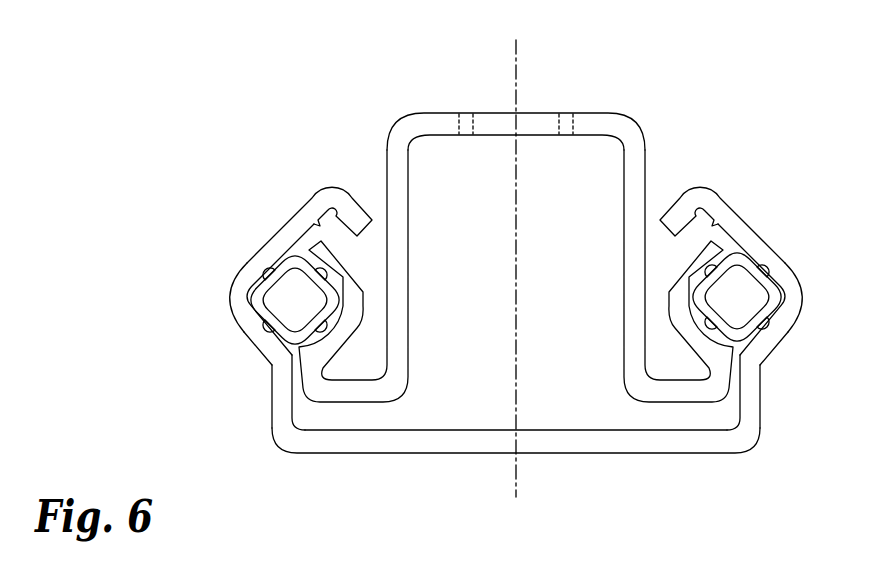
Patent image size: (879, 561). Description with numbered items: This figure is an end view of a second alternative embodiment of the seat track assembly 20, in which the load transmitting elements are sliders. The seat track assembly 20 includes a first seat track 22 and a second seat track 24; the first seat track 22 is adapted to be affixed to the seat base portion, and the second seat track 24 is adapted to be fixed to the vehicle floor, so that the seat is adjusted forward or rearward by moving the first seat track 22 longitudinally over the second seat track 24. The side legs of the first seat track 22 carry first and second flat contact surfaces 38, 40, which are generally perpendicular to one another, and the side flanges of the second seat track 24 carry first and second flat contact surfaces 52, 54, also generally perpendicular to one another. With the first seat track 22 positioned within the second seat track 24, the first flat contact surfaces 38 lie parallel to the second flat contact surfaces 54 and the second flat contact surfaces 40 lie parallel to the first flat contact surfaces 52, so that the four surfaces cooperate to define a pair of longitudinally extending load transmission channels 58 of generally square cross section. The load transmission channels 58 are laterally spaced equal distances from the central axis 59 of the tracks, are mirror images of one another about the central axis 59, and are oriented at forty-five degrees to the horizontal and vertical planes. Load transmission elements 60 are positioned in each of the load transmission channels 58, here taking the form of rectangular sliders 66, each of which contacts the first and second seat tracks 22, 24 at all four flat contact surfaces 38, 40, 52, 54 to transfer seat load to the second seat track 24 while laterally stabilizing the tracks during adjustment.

The seat track assembly 20 is at (163, 88).
The first seat track 22 is at (603, 109).
The second seat track 24 is at (630, 462).
The first flat contact surfaces 38 is at (322, 323).
The second flat contact surfaces 40 is at (318, 276).
The first flat contact surfaces 52 is at (258, 333).
The second flat contact surfaces 54 is at (317, 226).
The load transmission channels 58 is at (295, 358).
The central axis 59 is at (520, 57).
The load transmission elements 60 is at (284, 254).
The sliders 66 is at (241, 295).